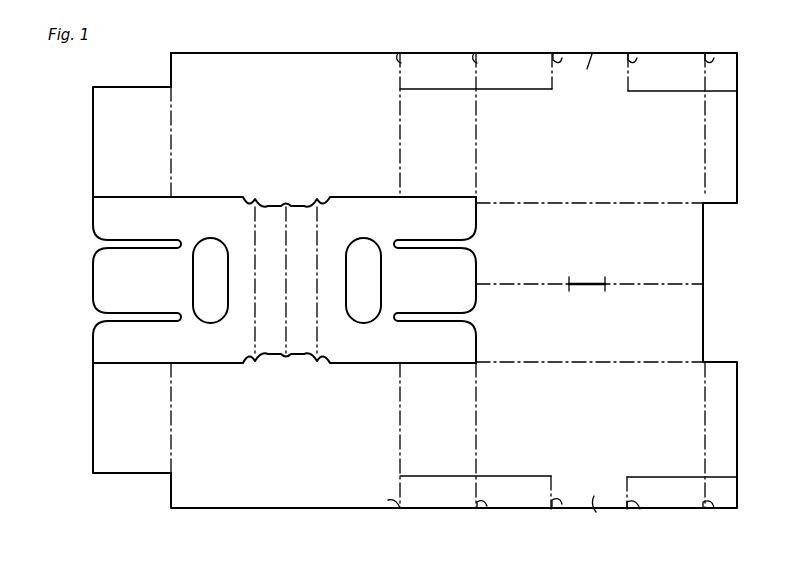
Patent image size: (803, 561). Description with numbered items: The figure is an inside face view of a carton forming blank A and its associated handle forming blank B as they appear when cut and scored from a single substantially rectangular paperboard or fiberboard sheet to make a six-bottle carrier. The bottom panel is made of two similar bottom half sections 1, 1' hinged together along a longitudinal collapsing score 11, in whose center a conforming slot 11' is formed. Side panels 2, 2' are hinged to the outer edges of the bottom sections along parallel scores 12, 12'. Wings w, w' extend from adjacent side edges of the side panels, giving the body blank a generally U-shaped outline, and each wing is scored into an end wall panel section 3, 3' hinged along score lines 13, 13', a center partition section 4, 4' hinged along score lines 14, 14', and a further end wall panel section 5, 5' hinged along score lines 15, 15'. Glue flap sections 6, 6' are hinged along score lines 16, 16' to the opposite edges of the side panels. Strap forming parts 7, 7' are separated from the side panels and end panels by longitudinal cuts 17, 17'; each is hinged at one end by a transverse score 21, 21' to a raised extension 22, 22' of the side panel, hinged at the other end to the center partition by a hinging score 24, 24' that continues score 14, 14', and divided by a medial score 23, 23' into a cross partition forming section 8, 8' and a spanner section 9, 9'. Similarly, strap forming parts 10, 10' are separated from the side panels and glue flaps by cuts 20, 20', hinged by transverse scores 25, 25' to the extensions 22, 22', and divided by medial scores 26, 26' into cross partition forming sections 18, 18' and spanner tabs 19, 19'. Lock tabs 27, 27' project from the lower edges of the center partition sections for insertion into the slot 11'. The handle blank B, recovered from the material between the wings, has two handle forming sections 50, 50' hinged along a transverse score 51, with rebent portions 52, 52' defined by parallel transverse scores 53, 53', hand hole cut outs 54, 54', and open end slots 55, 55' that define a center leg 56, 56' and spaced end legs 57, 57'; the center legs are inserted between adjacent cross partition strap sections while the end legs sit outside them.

The bottom half section 1 is at (586, 240).
The bottom half section 1' is at (587, 322).
The side panel 2 is at (644, 125).
The side panel 2' is at (645, 435).
The end wall panel section 3 is at (453, 125).
The end wall panel section 3' is at (453, 435).
The center partition section 4 is at (337, 125).
The center partition section 4' is at (337, 435).
The end wall panel section 5 is at (147, 142).
The end wall panel section 5' is at (148, 418).
The glue flap section 6 is at (721, 147).
The glue flap section 6' is at (721, 428).
The strap forming part 7 is at (419, 34).
The strap forming part 7' is at (431, 523).
The cross partition forming section 8 is at (530, 71).
The cross partition forming section 8' is at (530, 492).
The spanner section 9 is at (476, 76).
The spanner section 9' is at (475, 487).
The strap forming part 10 is at (693, 33).
The strap forming part 10' is at (681, 521).
The collapsing score 11 is at (589, 271).
The slot 11' is at (572, 272).
The score 12 is at (589, 191).
The score 12' is at (589, 374).
The score line 13 is at (497, 152).
The score line 13' is at (498, 422).
The score line 14 is at (381, 128).
The score line 14' is at (378, 440).
The score line 15 is at (189, 118).
The score line 15' is at (193, 422).
The score line 16 is at (689, 155).
The score line 16' is at (688, 437).
The longitudinally extending cut 17 is at (506, 103).
The longitudinally extending cut 17' is at (509, 461).
The cross partition forming section 18 is at (682, 72).
The cross partition forming section 18' is at (682, 493).
The spanner tab 19 is at (723, 73).
The spanner tab 19' is at (724, 491).
The longitudinally extending cut 20 is at (675, 106).
The longitudinally extending cut 20' is at (676, 462).
The transverse score 21 is at (562, 44).
The transverse score 21' is at (567, 516).
The raised extension 22 is at (591, 47).
The raised extension 22' is at (607, 515).
The medial score 23 is at (463, 46).
The medial score 23' is at (491, 517).
The hinging score 24 is at (386, 46).
The hinging score 24' is at (382, 517).
The transverse score 25 is at (640, 46).
The transverse score 25' is at (643, 519).
The medial score 26 is at (718, 46).
The medial score 26' is at (719, 519).
The lock tab 27 is at (304, 182).
The lock tab 27' is at (263, 377).
The handle forming section 50 is at (356, 220).
The handle forming section 50' is at (230, 213).
The transverse score 51 is at (285, 313).
The rebent portion 52 is at (306, 280).
The rebent portion 52' is at (269, 280).
The transverse score 53 is at (332, 307).
The transverse score 53' is at (243, 302).
The hand hole cut out 54 is at (354, 280).
The hand hole cut out 54' is at (223, 280).
The open end slot 55 is at (404, 280).
The open end slot 55' is at (172, 280).
The center leg 56 is at (437, 280).
The center leg 56' is at (135, 280).
The end leg 57 is at (437, 280).
The end leg 57' is at (135, 280).
The carton forming blank A is at (356, 52).
The handle forming blank B is at (88, 278).
The wing w is at (60, 129).
The wing w' is at (60, 414).